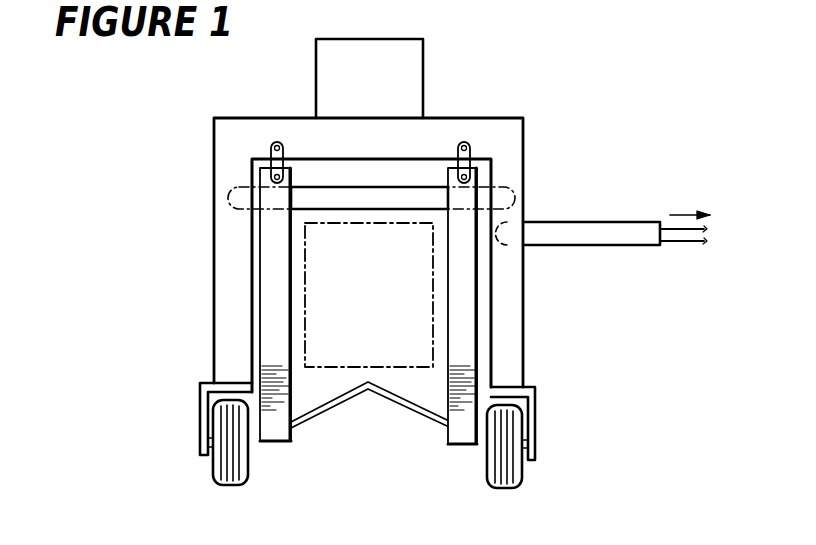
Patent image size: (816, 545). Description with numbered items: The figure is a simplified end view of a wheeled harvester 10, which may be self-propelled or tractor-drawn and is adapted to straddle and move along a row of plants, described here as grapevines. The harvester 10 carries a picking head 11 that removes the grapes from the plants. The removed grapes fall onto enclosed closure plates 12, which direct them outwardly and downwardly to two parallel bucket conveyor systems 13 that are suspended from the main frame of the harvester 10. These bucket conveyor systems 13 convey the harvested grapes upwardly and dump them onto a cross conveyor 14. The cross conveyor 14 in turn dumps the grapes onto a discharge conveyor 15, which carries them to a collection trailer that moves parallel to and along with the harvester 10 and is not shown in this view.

The wheeled harvester 10 is at (588, 122).
The picking head 11 is at (380, 303).
The closure plates 12 is at (406, 408).
The bucket conveyor systems 13 is at (275, 303).
The cross conveyor 14 is at (368, 188).
The discharge conveyor 15 is at (637, 222).